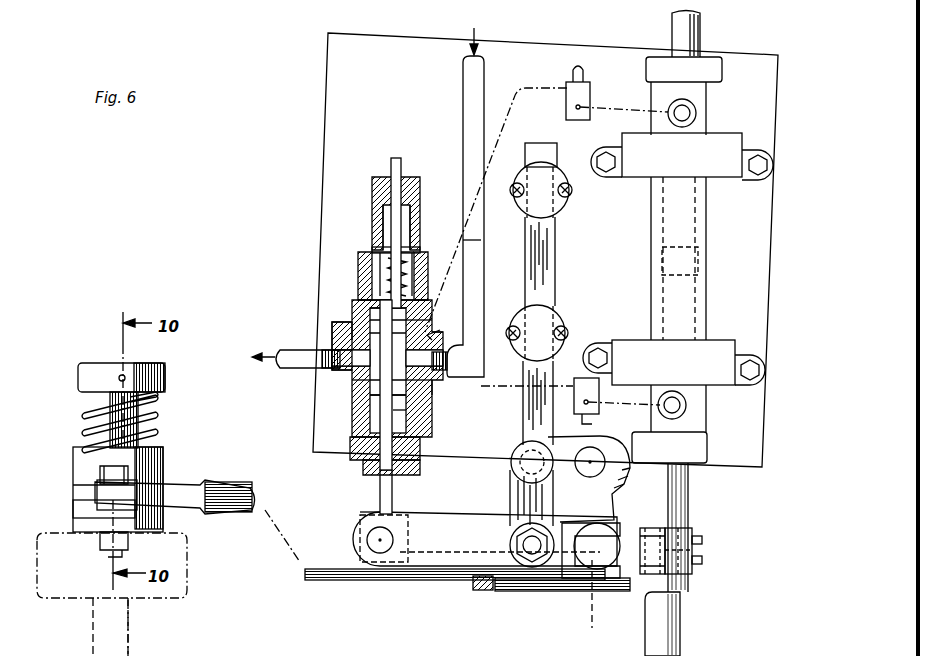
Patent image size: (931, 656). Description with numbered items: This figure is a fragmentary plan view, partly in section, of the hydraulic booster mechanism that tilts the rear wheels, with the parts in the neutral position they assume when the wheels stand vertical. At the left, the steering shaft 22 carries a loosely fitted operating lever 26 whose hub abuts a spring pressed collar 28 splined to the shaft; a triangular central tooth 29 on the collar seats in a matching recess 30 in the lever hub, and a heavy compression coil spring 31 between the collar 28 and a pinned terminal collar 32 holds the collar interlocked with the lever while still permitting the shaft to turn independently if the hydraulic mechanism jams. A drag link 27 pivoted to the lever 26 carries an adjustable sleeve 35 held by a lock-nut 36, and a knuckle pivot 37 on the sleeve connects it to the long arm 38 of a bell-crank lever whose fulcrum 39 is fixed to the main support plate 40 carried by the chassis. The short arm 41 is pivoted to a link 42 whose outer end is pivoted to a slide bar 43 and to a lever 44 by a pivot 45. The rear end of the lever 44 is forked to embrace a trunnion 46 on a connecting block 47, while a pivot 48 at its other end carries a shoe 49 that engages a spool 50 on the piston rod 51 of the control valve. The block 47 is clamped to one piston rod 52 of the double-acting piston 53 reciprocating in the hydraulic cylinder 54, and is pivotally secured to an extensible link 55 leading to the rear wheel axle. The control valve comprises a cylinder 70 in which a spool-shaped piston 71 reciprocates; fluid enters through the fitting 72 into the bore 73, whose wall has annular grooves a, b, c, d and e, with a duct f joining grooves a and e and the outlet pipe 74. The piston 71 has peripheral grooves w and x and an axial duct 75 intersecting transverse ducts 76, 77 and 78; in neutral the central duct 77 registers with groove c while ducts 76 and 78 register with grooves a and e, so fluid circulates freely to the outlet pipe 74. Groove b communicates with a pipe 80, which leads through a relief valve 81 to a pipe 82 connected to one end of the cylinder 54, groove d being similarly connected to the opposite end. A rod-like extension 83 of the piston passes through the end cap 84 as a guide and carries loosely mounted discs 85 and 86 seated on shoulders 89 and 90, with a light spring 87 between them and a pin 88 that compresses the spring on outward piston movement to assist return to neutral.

The shaft 22 is at (132, 630).
The operating lever 26 is at (88, 518).
The drag link 27 is at (240, 494).
The spring pressed collar 28 is at (163, 455).
The central tooth 29 is at (100, 474).
The recess 30 is at (140, 474).
The compression coil spring 31 is at (86, 404).
The terminal collar 32 is at (90, 378).
The adjustable sleeve 35 is at (562, 592).
The lock-nut 36 is at (480, 590).
The knuckle pivot 37 is at (597, 585).
The long arm of bell-crank lever 38 is at (612, 507).
The fulcrum 39 is at (600, 472).
The main support plate 40 is at (751, 470).
The short arm 41 is at (516, 452).
The link 42 is at (510, 494).
The slide bar 43 is at (532, 279).
The lever 44 is at (450, 516).
The pivot 45 is at (530, 554).
The trunnion 46 is at (618, 548).
The connecting block 47 is at (692, 552).
The pivot 48 is at (375, 545).
The head or shoe 49 is at (360, 528).
The spool 50 is at (360, 512).
The piston rod 51 is at (380, 490).
The piston rod 52 is at (702, 30).
The double-acting piston 53 is at (700, 260).
The hydraulic cylinder 54 is at (706, 306).
The extensible link 55 is at (680, 608).
The cylinder 70 is at (352, 312).
The spool-shaped piston 71 is at (370, 312).
The fitting 72 is at (460, 372).
The bore 73 is at (350, 445).
The outlet pipe 74 is at (286, 368).
The axial duct 75 is at (352, 386).
The transverse duct 76 is at (360, 278).
The central transverse duct 77 is at (332, 338).
The transverse duct 78 is at (420, 466).
The pipe 80 is at (508, 136).
The relief valve 81 is at (590, 90).
The pipe 82 is at (620, 112).
The rod-like extension 83 is at (391, 160).
The end cap 84 is at (372, 182).
The disc 85 is at (383, 222).
The disc 86 is at (358, 290).
The compression coil spring 87 is at (388, 262).
The pin 88 is at (400, 250).
The shoulder 89 is at (395, 253).
The shoulder 90 is at (426, 332).
The annular surface groove a is at (420, 322).
The annular surface groove b is at (436, 336).
The annular surface groove c is at (432, 382).
The annular surface groove d is at (430, 396).
The annular surface groove e is at (406, 412).
The duct f is at (352, 330).
The peripheral groove w is at (332, 340).
The peripheral groove x is at (372, 395).